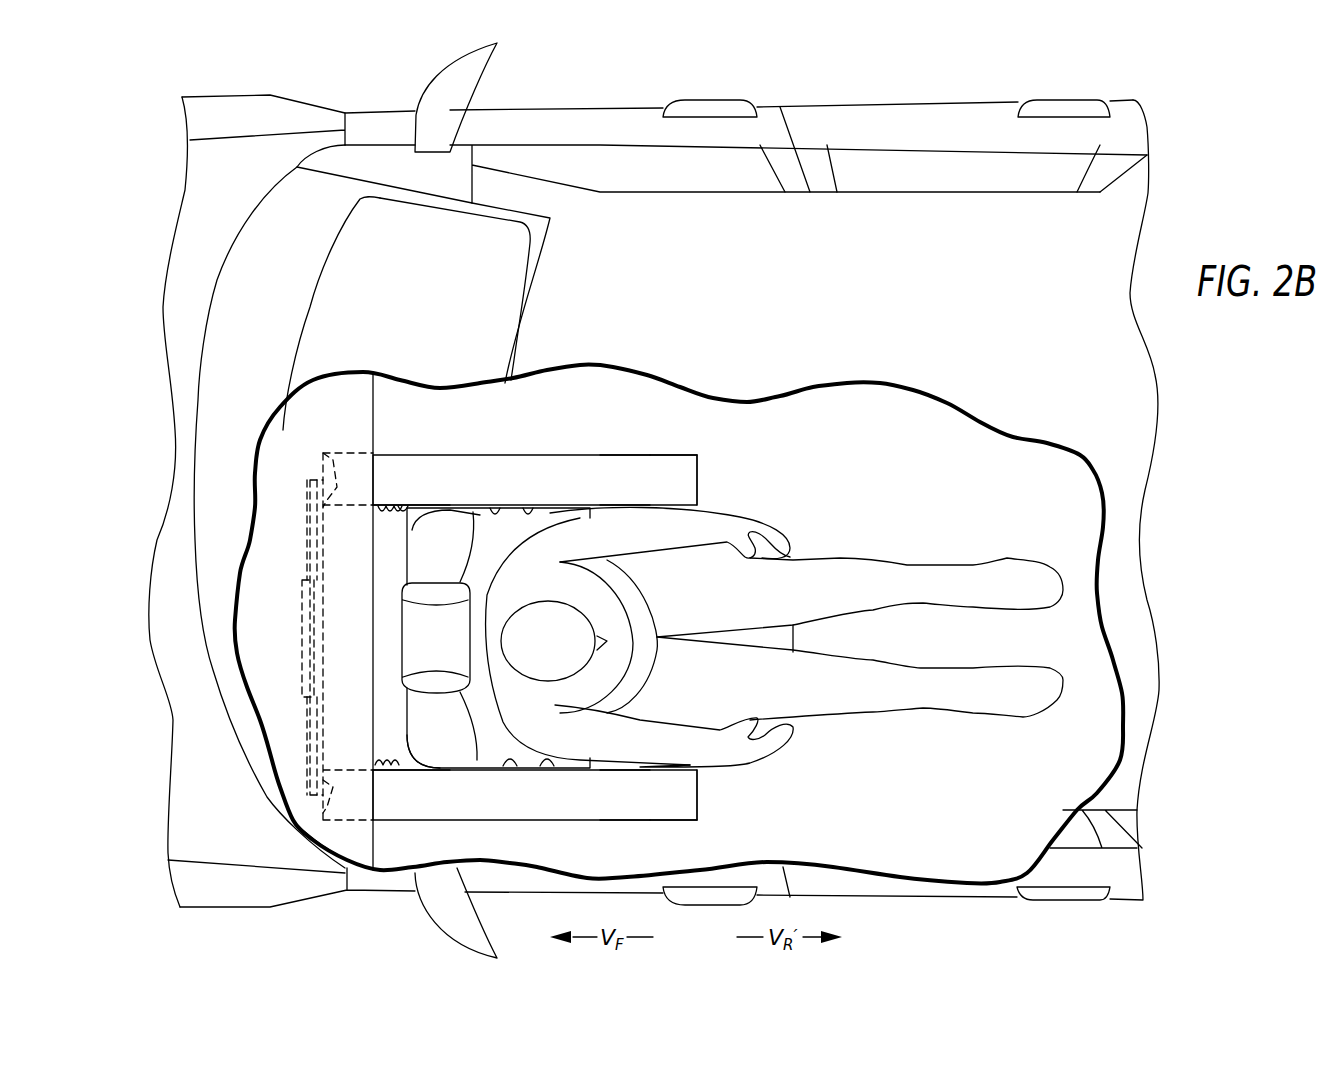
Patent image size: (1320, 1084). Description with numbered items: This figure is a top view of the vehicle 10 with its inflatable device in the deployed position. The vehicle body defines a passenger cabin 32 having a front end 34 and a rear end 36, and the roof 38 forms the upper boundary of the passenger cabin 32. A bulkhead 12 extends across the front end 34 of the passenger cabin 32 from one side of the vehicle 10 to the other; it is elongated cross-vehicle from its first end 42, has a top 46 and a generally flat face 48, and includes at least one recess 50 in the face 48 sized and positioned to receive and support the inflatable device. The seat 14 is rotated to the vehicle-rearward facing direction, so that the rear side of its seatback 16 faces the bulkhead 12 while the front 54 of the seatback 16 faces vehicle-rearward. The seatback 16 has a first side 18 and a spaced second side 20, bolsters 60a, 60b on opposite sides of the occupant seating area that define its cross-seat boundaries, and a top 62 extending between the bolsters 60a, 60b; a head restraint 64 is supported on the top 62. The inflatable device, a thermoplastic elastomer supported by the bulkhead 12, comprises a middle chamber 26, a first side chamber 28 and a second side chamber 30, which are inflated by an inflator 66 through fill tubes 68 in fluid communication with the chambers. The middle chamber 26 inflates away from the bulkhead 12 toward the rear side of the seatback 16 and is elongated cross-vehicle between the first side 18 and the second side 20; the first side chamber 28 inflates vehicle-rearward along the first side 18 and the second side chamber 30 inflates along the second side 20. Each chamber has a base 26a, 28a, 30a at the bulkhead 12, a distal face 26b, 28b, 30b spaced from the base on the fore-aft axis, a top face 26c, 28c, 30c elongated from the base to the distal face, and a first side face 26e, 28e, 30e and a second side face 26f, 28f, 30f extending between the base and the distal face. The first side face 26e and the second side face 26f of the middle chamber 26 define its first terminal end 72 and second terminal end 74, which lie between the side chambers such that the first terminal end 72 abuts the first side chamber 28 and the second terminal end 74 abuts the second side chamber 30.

The vehicle 10 is at (126, 148).
The bulkhead 12 is at (386, 371).
The seat 14 is at (793, 635).
The seatback 16 is at (547, 712).
The first side 18 is at (511, 765).
The second side 20 is at (503, 506).
The middle chamber 26 is at (343, 542).
The base 26a is at (333, 647).
The distal face 26b is at (412, 528).
The top face 26c is at (385, 525).
The first side face 26e is at (387, 763).
The second side face 26f is at (385, 503).
The first side chamber 28 is at (347, 805).
The base 28a is at (347, 803).
The distal face 28b is at (697, 793).
The top face 28c is at (670, 798).
The first side face 28e is at (640, 820).
The second side face 28f is at (623, 771).
The second side chamber 30 is at (333, 453).
The base 30a is at (333, 490).
The distal face 30b is at (697, 482).
The top face 30c is at (670, 480).
The first side face 30e is at (623, 503).
The second side face 30f is at (643, 453).
The passenger cabin 32 is at (827, 438).
The front end 34 is at (441, 417).
The rear end 36 is at (1080, 496).
The roof 38 is at (750, 393).
The first end 42 is at (350, 853).
The top 46 is at (352, 393).
The face 48 is at (377, 403).
The recess 50 is at (340, 513).
The front 54 is at (486, 688).
The bolster 60a is at (547, 762).
The bolster 60b is at (537, 508).
The top 62 is at (445, 540).
The head restraint 64 is at (427, 625).
The inflator 66 is at (303, 677).
The fill tubes 68 is at (310, 560).
The first terminal end 72 is at (400, 753).
The second terminal end 74 is at (400, 503).